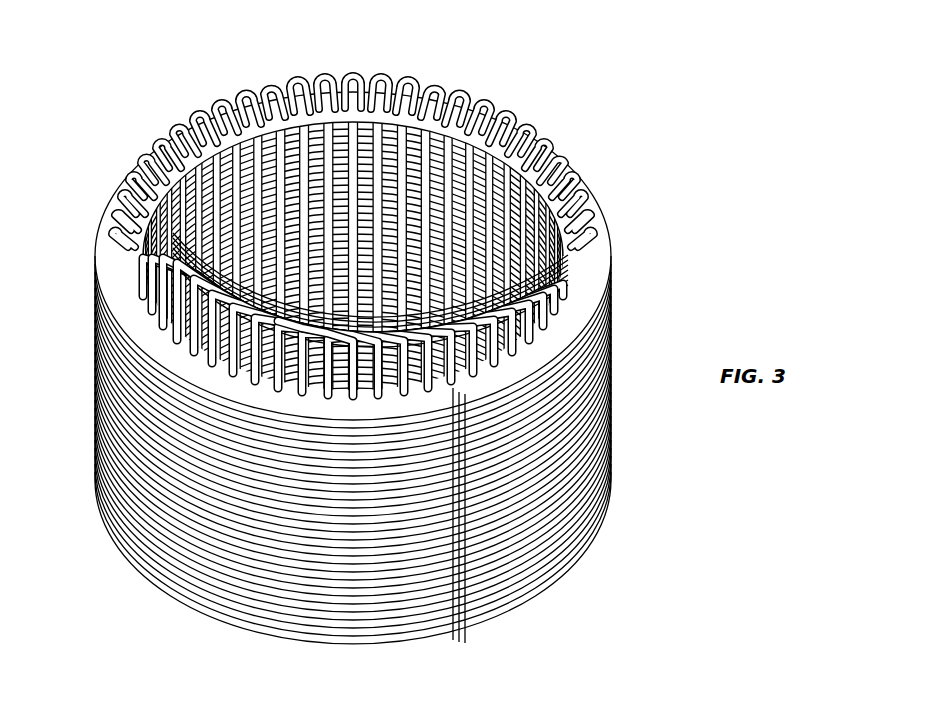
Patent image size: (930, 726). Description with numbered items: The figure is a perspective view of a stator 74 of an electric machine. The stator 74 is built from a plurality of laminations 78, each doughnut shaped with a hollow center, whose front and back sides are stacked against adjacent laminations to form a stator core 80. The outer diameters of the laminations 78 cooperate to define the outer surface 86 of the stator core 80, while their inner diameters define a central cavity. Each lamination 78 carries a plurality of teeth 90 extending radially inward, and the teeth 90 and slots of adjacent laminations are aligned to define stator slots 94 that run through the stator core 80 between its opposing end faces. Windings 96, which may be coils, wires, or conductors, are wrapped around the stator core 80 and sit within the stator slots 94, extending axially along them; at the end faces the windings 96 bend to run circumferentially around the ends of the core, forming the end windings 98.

The stator 74 is at (550, 70).
The laminations 78 is at (580, 223).
The stator core 80 is at (603, 360).
The outer surface 86 is at (85, 375).
The teeth 90 is at (270, 95).
The stator slots 94 is at (477, 347).
The windings 96 is at (257, 367).
The end windings 98 is at (547, 167).